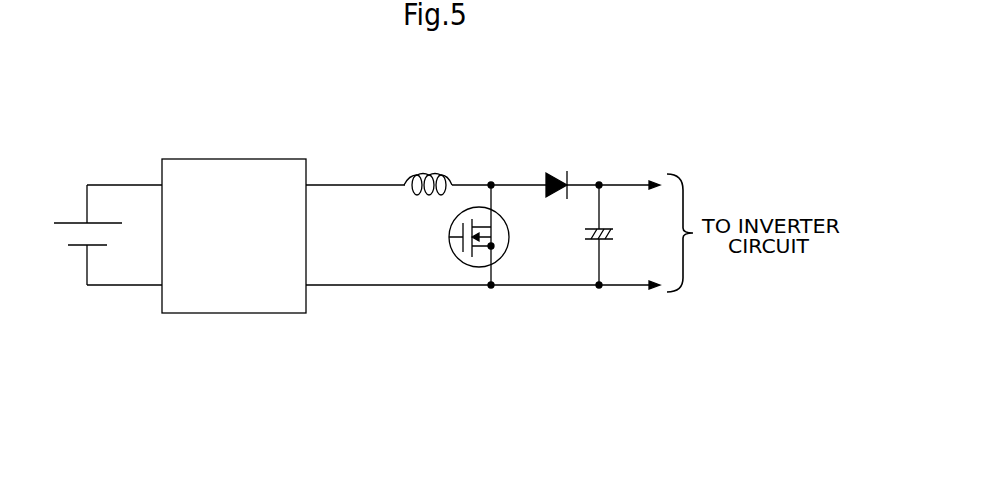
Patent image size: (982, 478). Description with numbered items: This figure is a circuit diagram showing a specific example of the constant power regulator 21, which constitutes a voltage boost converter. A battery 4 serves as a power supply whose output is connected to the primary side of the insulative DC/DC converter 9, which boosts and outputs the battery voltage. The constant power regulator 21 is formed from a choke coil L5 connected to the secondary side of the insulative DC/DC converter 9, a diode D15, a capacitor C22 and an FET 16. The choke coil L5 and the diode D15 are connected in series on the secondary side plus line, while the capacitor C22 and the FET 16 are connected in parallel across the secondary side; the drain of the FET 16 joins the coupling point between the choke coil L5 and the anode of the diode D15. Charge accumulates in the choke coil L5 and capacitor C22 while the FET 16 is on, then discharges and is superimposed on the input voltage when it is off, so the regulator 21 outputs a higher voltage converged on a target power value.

The battery 4 is at (63, 237).
The insulative DC/DC converter 9 is at (243, 313).
The choke coil L5 is at (428, 162).
The diode D15 is at (550, 172).
The FET 16 is at (449, 243).
The capacitor C22 is at (580, 233).
The constant power regulator 21 is at (474, 303).